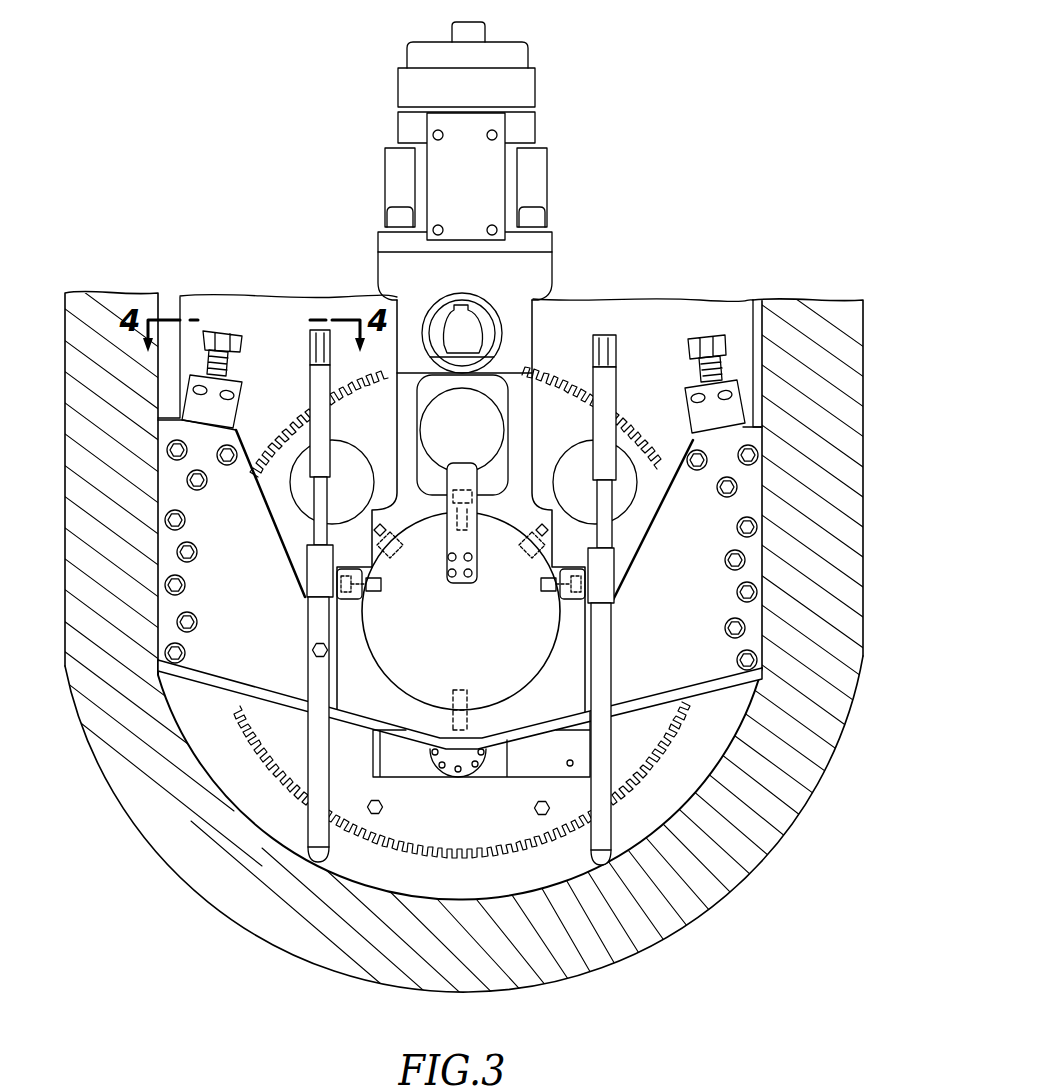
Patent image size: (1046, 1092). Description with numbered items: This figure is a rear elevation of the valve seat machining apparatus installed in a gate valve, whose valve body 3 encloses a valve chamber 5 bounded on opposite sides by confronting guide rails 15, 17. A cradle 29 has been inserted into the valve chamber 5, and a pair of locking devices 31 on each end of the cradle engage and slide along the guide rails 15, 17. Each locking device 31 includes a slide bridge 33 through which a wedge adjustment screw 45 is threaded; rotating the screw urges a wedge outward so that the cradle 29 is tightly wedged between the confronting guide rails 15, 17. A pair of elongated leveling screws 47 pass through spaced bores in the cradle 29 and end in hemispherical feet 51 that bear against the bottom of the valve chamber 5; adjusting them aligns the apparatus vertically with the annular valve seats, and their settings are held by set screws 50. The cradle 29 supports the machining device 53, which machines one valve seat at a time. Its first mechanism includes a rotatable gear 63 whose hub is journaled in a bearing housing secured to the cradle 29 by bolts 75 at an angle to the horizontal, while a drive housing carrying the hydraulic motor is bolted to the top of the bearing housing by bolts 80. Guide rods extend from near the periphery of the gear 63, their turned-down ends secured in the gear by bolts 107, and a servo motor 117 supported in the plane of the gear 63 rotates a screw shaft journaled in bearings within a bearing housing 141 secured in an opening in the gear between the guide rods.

The valve body 3 is at (83, 297).
The valve chamber 5 is at (632, 307).
The guide rail 15 is at (175, 297).
The guide rail 17 is at (760, 303).
The cradle 29 is at (207, 510).
The locking device 31 is at (246, 310).
The slide bridge 33 is at (227, 415).
The wedge adjustment screw 45 is at (229, 360).
The leveling screw 47 is at (605, 352).
The set screw 50 is at (312, 652).
The hemispherical foot 51 is at (315, 855).
The machining device 53 is at (603, 228).
The gear 63 is at (557, 400).
The bolt 75 is at (330, 598).
The bolt 80 is at (457, 478).
The bolt 107 is at (378, 815).
The servo motor 117 is at (567, 765).
The bearing housing 141 is at (452, 778).